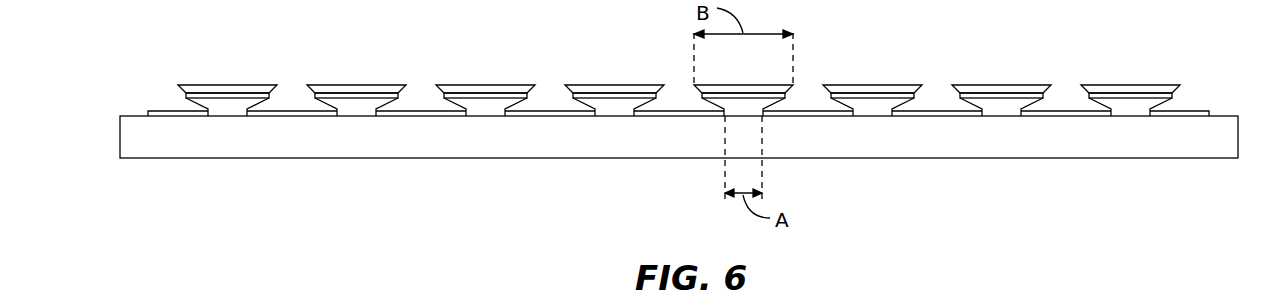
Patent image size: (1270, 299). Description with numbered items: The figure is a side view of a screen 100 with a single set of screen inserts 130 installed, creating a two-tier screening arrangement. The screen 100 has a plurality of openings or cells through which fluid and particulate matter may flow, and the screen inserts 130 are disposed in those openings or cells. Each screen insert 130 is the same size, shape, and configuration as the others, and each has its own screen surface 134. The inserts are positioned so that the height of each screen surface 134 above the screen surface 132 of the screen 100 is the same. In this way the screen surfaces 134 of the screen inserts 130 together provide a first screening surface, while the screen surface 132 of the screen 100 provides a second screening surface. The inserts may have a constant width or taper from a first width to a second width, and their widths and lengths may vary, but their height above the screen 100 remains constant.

The screen 100 is at (552, 145).
The screen insert 130 is at (350, 78).
The screen surface of the screen 132 is at (932, 110).
The screen surface of the screen insert 134 is at (370, 88).